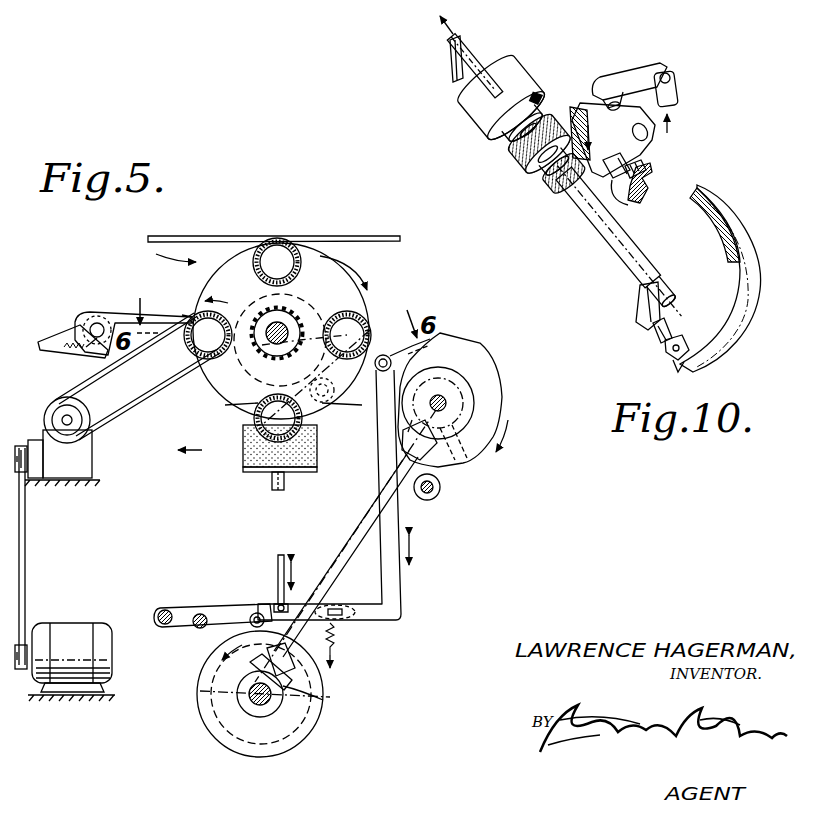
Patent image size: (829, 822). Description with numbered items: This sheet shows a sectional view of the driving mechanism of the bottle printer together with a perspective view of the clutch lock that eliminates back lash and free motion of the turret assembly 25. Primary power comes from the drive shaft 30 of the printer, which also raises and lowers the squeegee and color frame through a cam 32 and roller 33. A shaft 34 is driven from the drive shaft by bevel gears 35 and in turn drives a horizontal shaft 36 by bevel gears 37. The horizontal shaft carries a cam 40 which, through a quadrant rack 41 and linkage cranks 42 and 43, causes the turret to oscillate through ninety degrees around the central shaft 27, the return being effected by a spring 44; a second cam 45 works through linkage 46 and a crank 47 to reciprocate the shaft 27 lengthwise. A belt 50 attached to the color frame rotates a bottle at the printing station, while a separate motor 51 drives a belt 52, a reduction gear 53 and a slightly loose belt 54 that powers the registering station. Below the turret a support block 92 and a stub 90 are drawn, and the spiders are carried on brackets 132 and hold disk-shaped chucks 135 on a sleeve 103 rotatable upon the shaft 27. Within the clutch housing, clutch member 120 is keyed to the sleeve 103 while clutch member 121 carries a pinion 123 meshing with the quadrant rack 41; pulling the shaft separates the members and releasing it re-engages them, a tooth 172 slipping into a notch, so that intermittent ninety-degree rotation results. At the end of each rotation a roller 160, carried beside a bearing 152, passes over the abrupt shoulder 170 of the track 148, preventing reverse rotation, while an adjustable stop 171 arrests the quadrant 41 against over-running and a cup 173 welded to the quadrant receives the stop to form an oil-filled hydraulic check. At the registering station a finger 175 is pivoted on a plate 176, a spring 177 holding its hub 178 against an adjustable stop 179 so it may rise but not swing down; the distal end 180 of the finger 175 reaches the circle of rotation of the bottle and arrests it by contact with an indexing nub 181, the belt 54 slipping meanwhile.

In FIG. 5, the turret assembly 25 is at (172, 253).
In FIG. 5, the central shaft 27 is at (283, 328).
In FIG. 10, the central shaft 27 is at (478, 56).
In FIG. 5, the drive shaft 30 is at (450, 398).
In FIG. 5, the cam 32 is at (495, 395).
In FIG. 5, the roller 33 is at (440, 494).
In FIG. 5, the shaft 34 is at (350, 520).
In FIG. 5, the bevel gears 35 is at (440, 452).
In FIG. 5, the horizontal shaft 36 is at (248, 694).
In FIG. 5, the bevel gears 37 is at (276, 696).
In FIG. 5, the cam 40 is at (215, 640).
In FIG. 5, the quadrant rack 41 is at (252, 378).
In FIG. 10, the quadrant rack 41 is at (645, 148).
In FIG. 5, the linkage crank 42 is at (402, 594).
In FIG. 10, the linkage crank 42 is at (678, 93).
In FIG. 5, the linkage crank 43 is at (385, 355).
In FIG. 10, the linkage crank 43 is at (638, 68).
In FIG. 5, the spring 44 is at (336, 639).
In FIG. 5, the second cam 45 is at (306, 735).
In FIG. 5, the linkage 46 is at (277, 575).
In FIG. 10, the crank 47 is at (450, 68).
In FIG. 5, the belt 50 is at (308, 242).
In FIG. 5, the motor 51 is at (70, 628).
In FIG. 5, the belt 52 is at (26, 547).
In FIG. 5, the reduction gear 53 is at (86, 457).
In FIG. 5, the belt 54 is at (120, 415).
In FIG. 5, the stub 90 is at (286, 485).
In FIG. 5, the support block 92 is at (306, 448).
In FIG. 5, the sleeve 103 is at (272, 330).
In FIG. 10, the sleeve 103 is at (641, 248).
In FIG. 10, the clutch member 120 is at (512, 72).
In FIG. 10, the clutch member 121 is at (524, 83).
In FIG. 10, the pinion 123 is at (533, 178).
In FIG. 5, the bracket 132 is at (325, 268).
In FIG. 5, the chuck 135 is at (252, 405).
In FIG. 10, the track 148 is at (724, 304).
In FIG. 10, the bearing 152 is at (645, 296).
In FIG. 10, the roller 160 is at (664, 350).
In FIG. 10, the shoulder 170 is at (673, 336).
In FIG. 10, the stop 171 is at (642, 178).
In FIG. 10, the tooth 172 is at (516, 86).
In FIG. 10, the cup 173 is at (616, 194).
In FIG. 5, the finger 175 is at (122, 312).
In FIG. 5, the plate 176 is at (63, 335).
In FIG. 5, the spring 177 is at (62, 347).
In FIG. 5, the hub 178 is at (97, 342).
In FIG. 5, the adjustable stop 179 is at (118, 366).
In FIG. 5, the distal end 180 is at (182, 315).
In FIG. 5, the indexing nub 181 is at (188, 320).